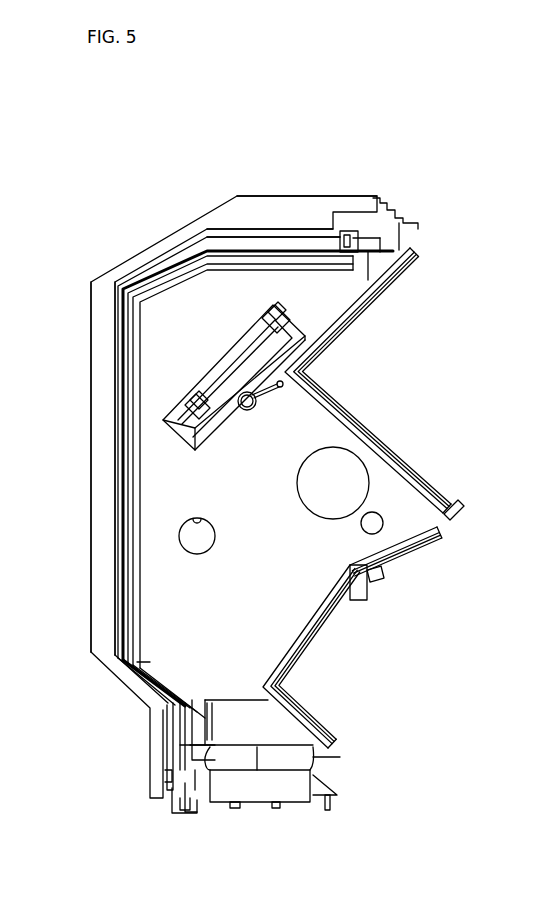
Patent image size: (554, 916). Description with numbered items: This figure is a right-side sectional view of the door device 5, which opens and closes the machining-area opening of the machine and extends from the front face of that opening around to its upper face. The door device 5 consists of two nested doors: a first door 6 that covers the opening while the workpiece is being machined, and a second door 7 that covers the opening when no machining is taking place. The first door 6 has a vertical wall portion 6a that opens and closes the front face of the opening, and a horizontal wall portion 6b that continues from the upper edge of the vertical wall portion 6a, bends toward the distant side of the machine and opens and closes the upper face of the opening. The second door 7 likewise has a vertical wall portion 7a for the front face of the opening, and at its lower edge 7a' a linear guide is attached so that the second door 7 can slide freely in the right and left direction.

The door device 5 is at (52, 404).
The first door 6 is at (116, 423).
The second door 7 is at (90, 446).
The vertical wall portion 6a is at (120, 382).
The horizontal wall portion 6b is at (270, 235).
The vertical wall portion 7a is at (76, 468).
The lower edge 7a' is at (142, 732).